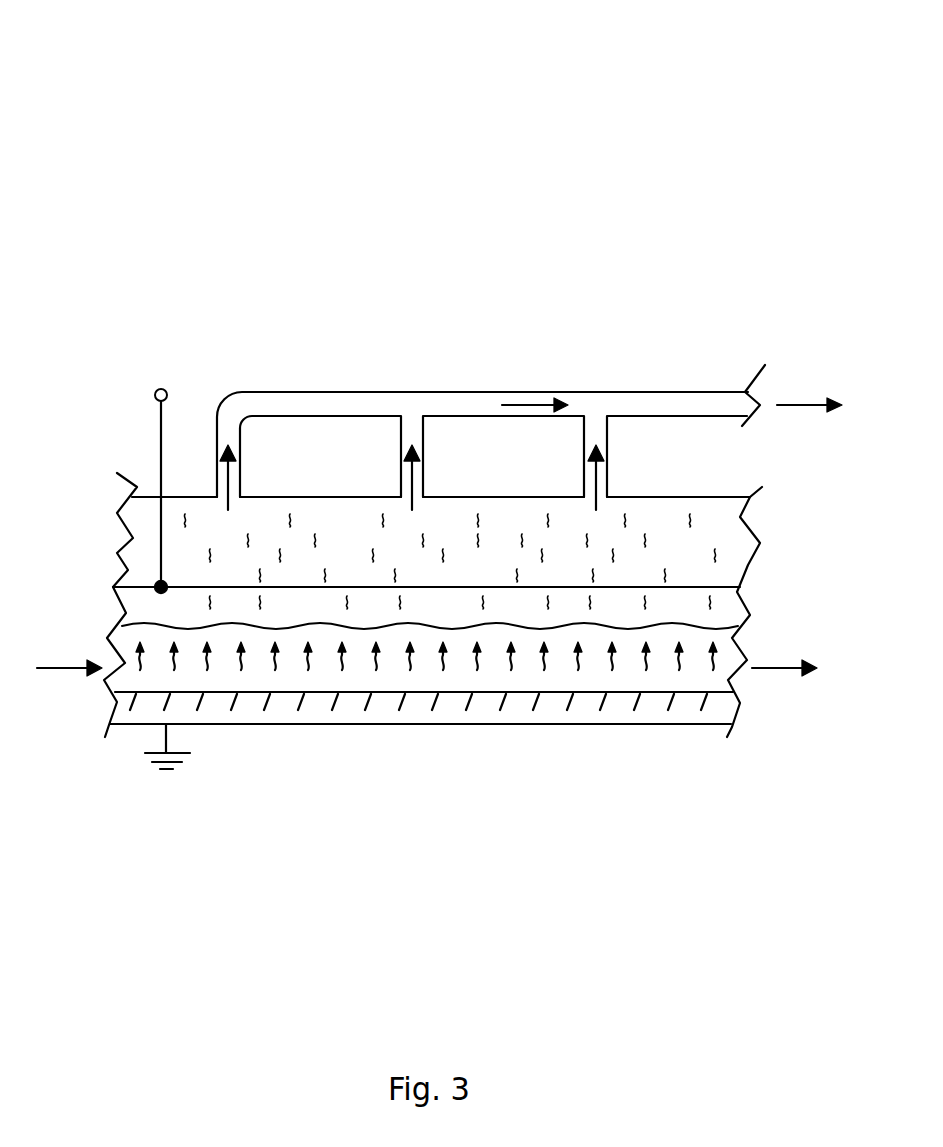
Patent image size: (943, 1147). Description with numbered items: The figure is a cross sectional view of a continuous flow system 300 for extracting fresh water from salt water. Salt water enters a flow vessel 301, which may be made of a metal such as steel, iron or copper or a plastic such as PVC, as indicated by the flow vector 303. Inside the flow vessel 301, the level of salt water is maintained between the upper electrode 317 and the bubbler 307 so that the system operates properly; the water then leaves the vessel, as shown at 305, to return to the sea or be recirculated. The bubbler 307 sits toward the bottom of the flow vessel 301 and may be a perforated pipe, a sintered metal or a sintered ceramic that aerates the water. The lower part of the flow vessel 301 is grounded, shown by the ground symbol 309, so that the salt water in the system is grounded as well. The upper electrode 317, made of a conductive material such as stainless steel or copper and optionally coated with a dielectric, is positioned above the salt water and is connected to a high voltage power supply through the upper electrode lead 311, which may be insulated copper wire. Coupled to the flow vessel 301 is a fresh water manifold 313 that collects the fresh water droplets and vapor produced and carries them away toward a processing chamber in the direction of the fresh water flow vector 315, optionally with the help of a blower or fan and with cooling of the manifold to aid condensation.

The continuous flow system 300 is at (175, 99).
The flow vessel 301 is at (155, 493).
The flow vector 303 is at (60, 668).
The brine outlet 305 is at (777, 668).
The bubbler 307 is at (377, 707).
The ground connection 309 is at (190, 753).
The upper electrode lead 311 is at (160, 420).
The fresh water manifold 313 is at (380, 403).
The fresh water flow vector 315 is at (530, 402).
The upper electrode 317 is at (725, 587).